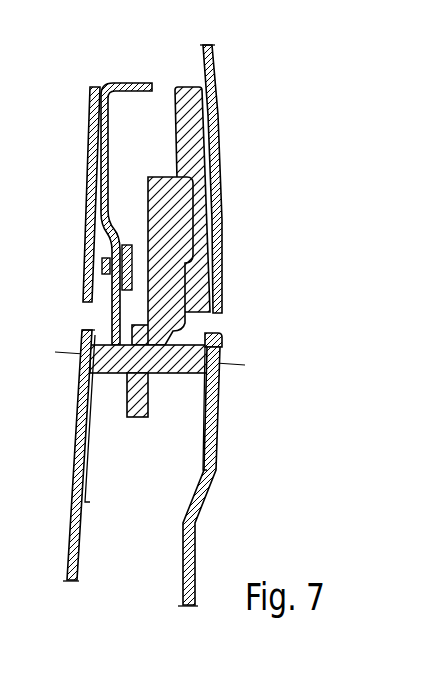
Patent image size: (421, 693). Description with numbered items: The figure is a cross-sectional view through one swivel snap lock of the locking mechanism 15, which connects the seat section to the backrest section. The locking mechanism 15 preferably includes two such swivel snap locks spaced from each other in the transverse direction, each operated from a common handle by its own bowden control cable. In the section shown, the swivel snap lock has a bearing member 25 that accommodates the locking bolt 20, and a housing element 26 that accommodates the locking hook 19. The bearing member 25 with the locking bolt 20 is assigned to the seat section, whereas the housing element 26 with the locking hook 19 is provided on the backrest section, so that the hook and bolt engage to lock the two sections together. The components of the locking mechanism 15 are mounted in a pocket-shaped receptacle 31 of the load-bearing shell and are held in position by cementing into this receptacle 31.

The locking mechanism 15 is at (243, 189).
The locking hook 19 is at (152, 393).
The locking bolt 20 is at (183, 344).
The bearing member 25 is at (198, 472).
The housing element 26 is at (90, 152).
The pocket-shaped receptacle 31 is at (147, 137).